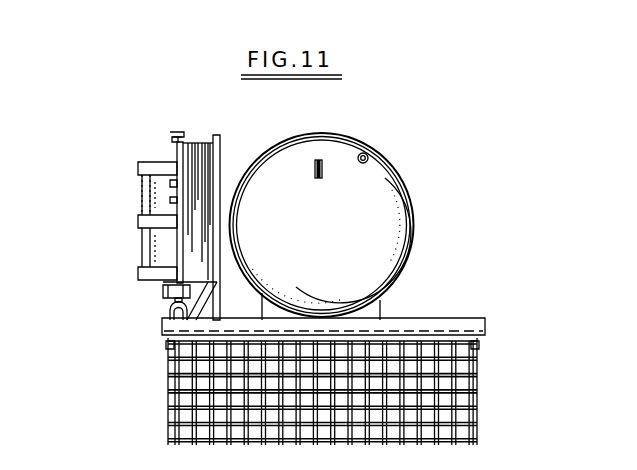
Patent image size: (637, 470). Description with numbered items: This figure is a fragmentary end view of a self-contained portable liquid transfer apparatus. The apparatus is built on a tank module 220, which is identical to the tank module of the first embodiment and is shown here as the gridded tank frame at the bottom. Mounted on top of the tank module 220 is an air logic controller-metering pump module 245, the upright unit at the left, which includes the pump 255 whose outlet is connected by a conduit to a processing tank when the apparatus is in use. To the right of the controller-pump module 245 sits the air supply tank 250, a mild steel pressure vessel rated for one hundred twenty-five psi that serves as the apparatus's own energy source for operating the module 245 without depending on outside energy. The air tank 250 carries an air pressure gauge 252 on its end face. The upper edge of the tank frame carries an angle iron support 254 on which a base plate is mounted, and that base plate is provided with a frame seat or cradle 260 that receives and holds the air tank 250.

The tank module 220 is at (492, 404).
The air logic controller-metering pump module 245 is at (132, 172).
The air supply tank 250 is at (396, 244).
The air pressure gauge 252 is at (314, 180).
The angle iron support 254 is at (485, 323).
The pump 255 is at (134, 252).
The frame seat or cradle 260 is at (370, 312).